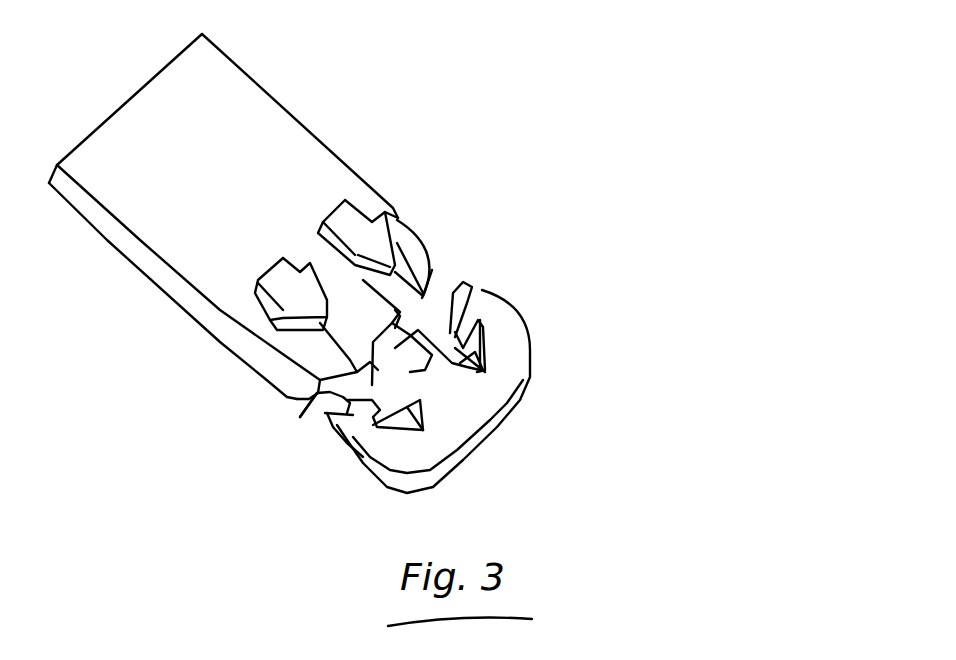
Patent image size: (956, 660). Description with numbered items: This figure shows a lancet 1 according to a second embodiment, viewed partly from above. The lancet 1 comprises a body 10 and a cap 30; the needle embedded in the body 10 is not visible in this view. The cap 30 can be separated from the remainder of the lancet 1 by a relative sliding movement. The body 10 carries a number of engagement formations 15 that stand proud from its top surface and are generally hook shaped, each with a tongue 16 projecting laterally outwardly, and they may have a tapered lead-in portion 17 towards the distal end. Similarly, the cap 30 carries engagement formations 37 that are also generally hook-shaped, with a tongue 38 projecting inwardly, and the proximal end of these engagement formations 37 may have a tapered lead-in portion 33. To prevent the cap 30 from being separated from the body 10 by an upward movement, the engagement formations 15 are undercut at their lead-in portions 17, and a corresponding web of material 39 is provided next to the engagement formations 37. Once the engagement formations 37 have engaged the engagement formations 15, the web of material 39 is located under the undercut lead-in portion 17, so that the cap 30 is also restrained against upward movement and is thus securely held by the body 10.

The lancet 1 is at (598, 152).
The body 10 is at (250, 87).
The engagement formations 15 is at (327, 213).
The tongue 16 is at (387, 213).
The tapered lead-in portion 17 is at (383, 252).
The cap 30 is at (493, 420).
The tapered lead-in portion 33 is at (317, 397).
The engagement formations 37 is at (343, 407).
The tongue 38 is at (467, 310).
The web of material 39 is at (478, 353).